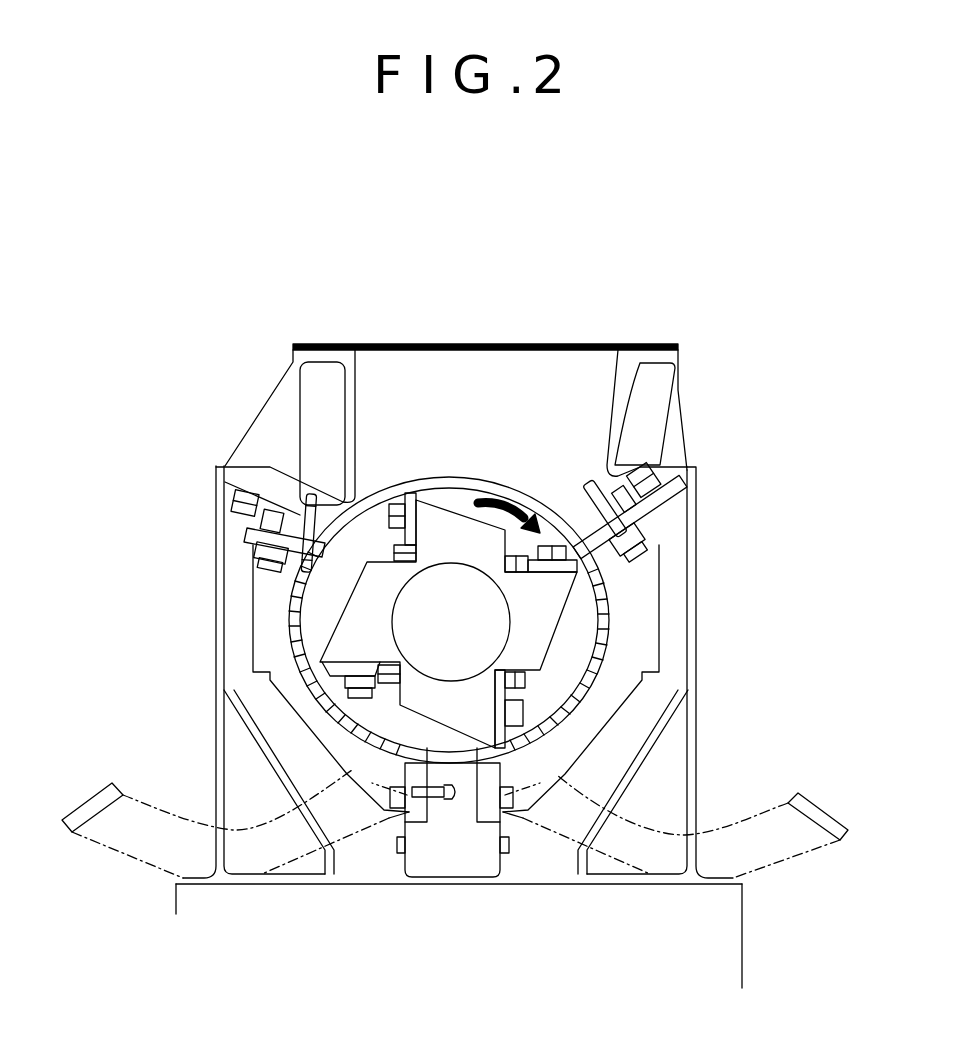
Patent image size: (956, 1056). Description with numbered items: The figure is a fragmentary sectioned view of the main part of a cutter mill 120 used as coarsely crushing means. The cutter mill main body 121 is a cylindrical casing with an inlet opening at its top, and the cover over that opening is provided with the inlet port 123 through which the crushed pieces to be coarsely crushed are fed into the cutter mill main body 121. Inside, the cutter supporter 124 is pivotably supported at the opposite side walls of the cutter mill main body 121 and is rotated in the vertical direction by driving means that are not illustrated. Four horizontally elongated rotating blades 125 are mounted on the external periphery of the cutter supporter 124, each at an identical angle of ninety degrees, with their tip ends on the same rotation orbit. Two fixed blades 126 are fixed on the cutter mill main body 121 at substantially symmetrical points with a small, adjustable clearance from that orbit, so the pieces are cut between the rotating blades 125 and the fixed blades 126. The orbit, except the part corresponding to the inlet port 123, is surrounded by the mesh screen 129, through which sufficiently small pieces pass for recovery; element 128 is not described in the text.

The cutter mill 120 is at (702, 346).
The cutter mill main body 121 is at (667, 468).
The inlet port 123 is at (380, 344).
The cutter supporter 124 is at (458, 498).
The rotating blades 125 is at (407, 487).
The fixed blades 126 is at (575, 548).
The rotor disc 128 is at (573, 622).
The mesh screen 129 is at (603, 667).